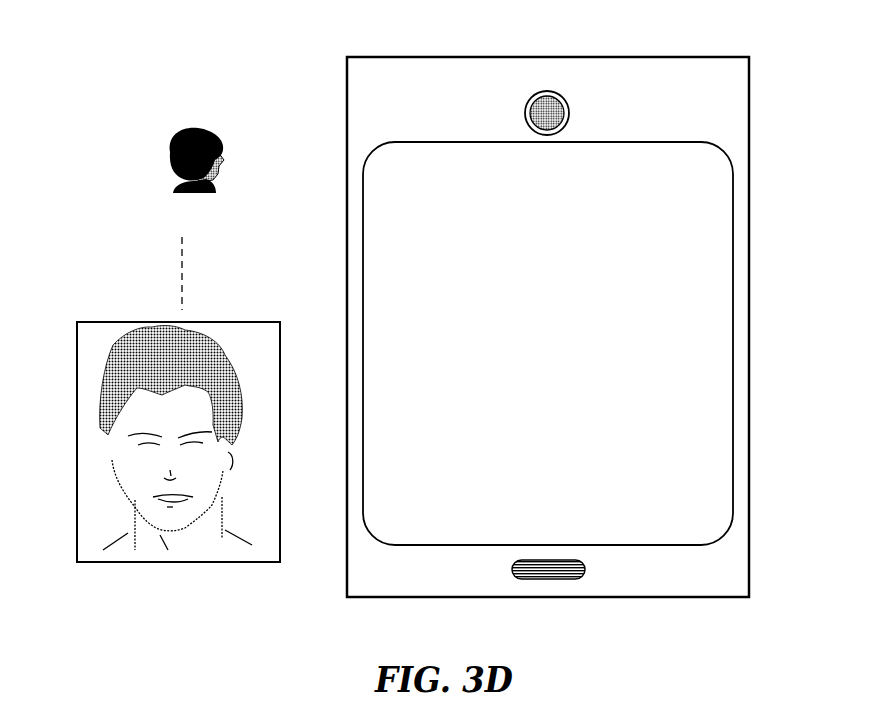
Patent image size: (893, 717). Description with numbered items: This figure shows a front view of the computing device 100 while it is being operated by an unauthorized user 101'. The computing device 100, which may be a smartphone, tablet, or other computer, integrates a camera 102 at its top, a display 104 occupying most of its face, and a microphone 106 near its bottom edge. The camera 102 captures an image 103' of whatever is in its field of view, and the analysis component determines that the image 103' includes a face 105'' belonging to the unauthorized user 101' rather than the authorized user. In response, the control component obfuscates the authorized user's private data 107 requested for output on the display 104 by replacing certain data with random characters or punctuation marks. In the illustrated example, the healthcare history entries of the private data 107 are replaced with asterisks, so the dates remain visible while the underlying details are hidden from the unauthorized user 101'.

The computing device 100 is at (695, 57).
The unauthorized user 101' is at (180, 162).
The camera 102 is at (569, 113).
The image 103' is at (151, 417).
The display 104 is at (576, 343).
The face 105'' is at (186, 438).
The microphone 106 is at (585, 571).
The private data 107 is at (659, 236).